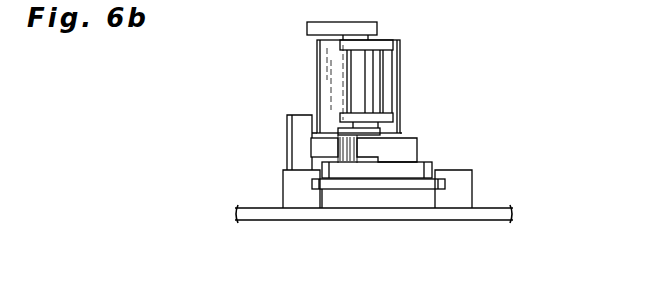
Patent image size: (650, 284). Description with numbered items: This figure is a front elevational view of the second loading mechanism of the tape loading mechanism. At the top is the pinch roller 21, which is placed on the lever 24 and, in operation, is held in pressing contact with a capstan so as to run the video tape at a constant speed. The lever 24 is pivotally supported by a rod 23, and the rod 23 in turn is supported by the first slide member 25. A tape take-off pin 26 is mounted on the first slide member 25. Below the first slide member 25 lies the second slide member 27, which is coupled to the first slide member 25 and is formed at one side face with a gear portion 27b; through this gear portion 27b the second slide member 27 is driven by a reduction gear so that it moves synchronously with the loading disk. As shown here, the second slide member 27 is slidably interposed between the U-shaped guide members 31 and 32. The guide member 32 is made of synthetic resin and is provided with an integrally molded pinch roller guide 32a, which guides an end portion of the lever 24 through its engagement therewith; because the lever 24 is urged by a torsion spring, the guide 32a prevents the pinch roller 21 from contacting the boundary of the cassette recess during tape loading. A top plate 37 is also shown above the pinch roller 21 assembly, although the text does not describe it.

The top plate 37 is at (316, 27).
The pinch roller 21 is at (327, 74).
The tape take-off pin 26 is at (368, 59).
The lever 24 is at (410, 140).
The rod 23 is at (350, 150).
The first slide member 25 is at (427, 163).
The gear portion 27b is at (318, 187).
The second slide member 27 is at (387, 189).
The guide member 31 is at (470, 186).
The guide member 32 is at (293, 187).
The pinch roller guide 32a is at (287, 127).